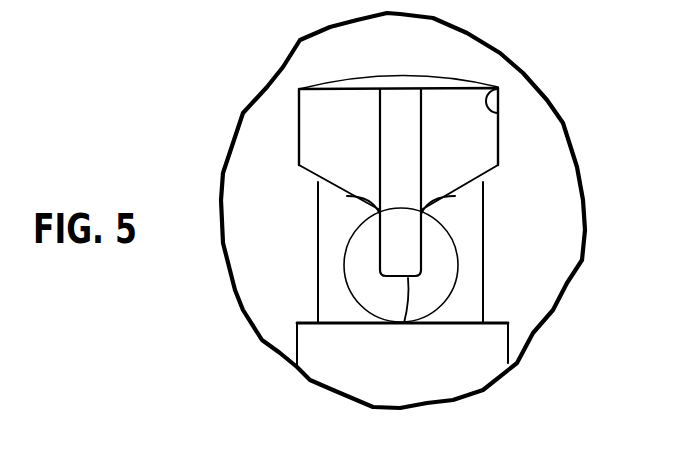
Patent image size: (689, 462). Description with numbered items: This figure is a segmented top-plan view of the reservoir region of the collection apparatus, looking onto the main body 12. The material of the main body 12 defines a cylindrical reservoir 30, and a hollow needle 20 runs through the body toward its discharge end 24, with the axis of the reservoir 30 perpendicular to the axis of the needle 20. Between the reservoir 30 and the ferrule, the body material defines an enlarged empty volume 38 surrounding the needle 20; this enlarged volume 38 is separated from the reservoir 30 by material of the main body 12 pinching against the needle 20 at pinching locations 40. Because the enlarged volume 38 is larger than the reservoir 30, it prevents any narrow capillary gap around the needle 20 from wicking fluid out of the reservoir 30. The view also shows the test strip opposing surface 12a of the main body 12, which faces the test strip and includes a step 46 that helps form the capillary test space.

The main body 12 is at (236, 292).
The test strip opposing surface 12a is at (525, 118).
The hollow needle 20 is at (395, 260).
The discharge end 24 is at (403, 318).
The cylindrical reservoir 30 is at (449, 243).
The enlarged empty volume 38 is at (498, 88).
The pinching locations 40 is at (455, 196).
The step 46 is at (471, 368).